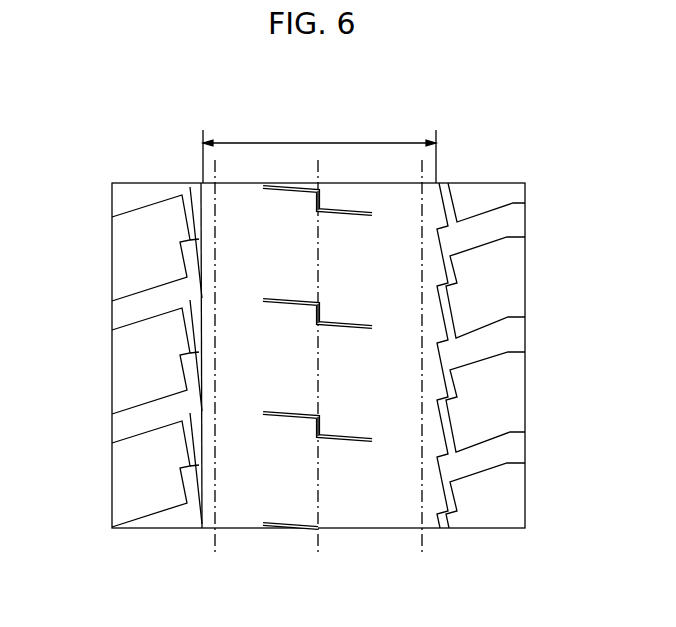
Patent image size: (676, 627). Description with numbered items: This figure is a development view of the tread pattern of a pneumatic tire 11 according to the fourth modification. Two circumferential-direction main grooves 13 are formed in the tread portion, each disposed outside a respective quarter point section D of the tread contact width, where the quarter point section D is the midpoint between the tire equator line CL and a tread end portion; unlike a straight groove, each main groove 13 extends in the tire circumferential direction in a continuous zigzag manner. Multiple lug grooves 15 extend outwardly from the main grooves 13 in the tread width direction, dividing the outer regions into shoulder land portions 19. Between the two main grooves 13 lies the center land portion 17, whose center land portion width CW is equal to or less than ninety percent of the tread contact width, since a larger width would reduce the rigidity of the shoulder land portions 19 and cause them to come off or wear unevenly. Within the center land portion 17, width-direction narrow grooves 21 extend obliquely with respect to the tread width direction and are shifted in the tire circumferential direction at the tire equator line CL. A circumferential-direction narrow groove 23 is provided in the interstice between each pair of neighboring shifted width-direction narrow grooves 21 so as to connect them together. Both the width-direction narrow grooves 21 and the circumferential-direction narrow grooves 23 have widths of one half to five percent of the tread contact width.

The pneumatic tire tread 11 is at (489, 147).
The circumferential-direction main groove 13 is at (182, 258).
The lug groove 15 is at (116, 196).
The center land portion 17 is at (338, 523).
The shoulder land portion 19 is at (133, 267).
The width-direction narrow groove 21 is at (282, 193).
The circumferential-direction narrow groove 23 is at (332, 200).
The center land portion width CW is at (319, 149).
The tire equator line CL is at (320, 167).
The quarter point section D is at (217, 542).